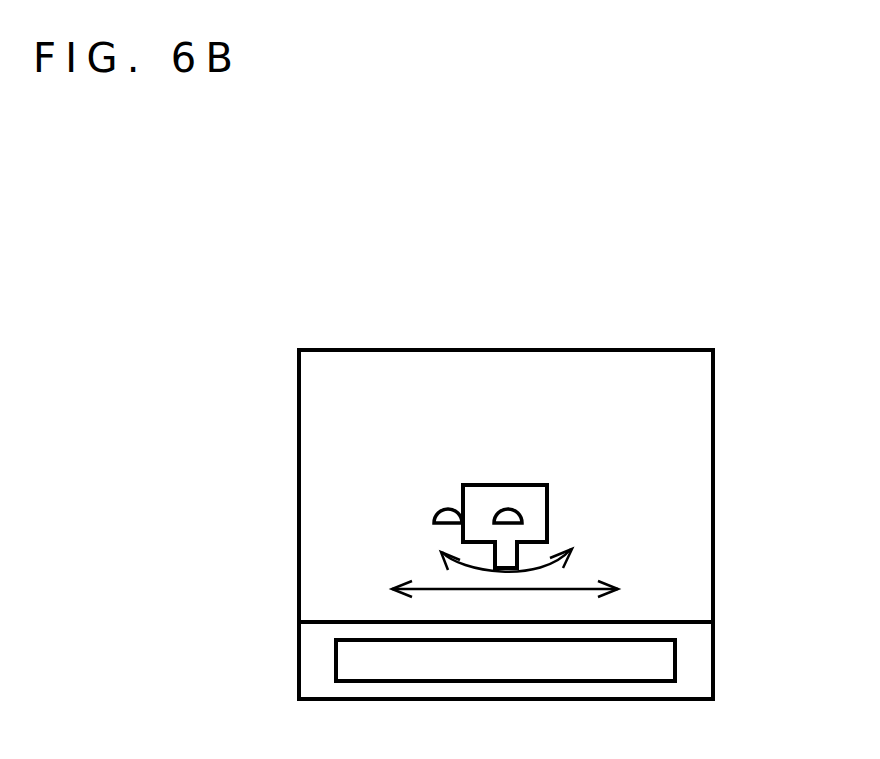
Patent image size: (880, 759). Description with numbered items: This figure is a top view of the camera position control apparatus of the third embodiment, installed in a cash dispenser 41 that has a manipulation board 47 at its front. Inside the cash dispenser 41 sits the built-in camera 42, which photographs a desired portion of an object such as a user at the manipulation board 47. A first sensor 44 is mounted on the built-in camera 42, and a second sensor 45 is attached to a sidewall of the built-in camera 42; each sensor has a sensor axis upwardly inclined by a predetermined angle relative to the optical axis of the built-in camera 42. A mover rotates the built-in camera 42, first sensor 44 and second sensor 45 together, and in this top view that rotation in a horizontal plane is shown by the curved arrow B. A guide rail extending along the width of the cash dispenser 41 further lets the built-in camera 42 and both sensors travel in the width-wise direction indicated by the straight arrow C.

The cash dispenser 41 is at (713, 459).
The built-in camera 42 is at (520, 498).
The first sensor 44 is at (500, 507).
The second sensor 45 is at (442, 508).
The manipulation board 47 is at (662, 666).
The arrow B is at (541, 572).
The arrow C is at (569, 590).